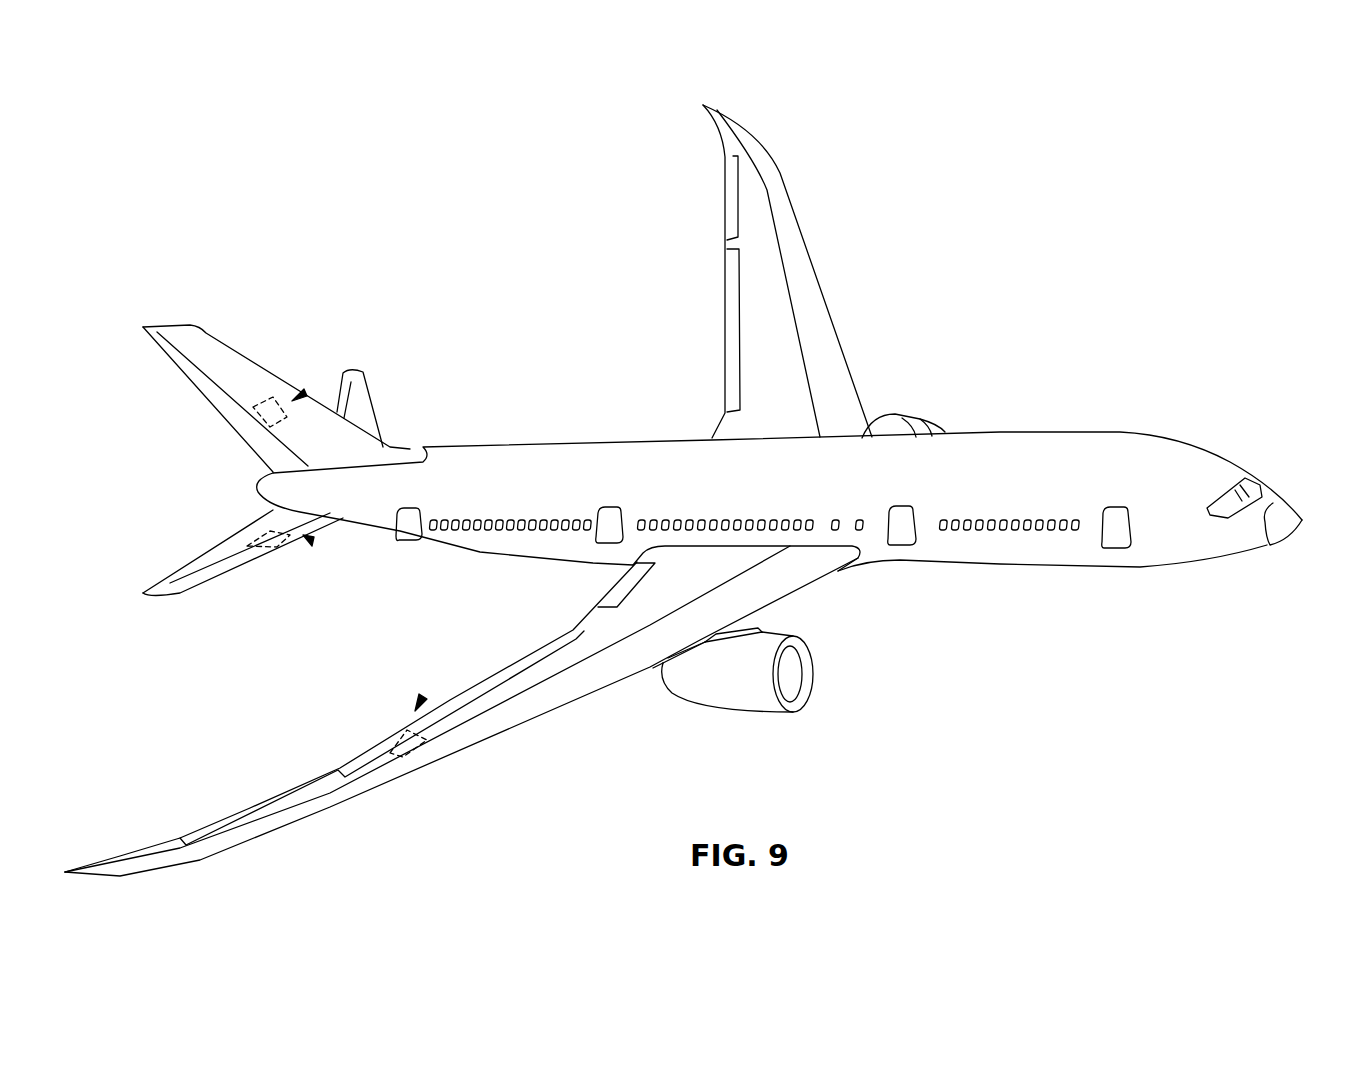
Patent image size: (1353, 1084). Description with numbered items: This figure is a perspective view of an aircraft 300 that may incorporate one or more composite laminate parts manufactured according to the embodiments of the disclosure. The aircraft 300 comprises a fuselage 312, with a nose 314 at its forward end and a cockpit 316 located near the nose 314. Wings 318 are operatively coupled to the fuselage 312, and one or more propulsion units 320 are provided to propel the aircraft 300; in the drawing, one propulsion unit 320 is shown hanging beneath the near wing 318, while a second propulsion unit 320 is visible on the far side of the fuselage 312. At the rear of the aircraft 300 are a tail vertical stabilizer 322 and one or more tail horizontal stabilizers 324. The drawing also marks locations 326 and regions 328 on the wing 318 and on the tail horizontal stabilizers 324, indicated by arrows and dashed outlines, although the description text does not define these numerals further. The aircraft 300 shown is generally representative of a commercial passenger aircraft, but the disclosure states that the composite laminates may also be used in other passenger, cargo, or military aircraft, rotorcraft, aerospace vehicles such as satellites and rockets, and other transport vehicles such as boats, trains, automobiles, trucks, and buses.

The aircraft 300 is at (1043, 220).
The fuselage 312 is at (1008, 450).
The nose 314 is at (1278, 530).
The cockpit 316 is at (1248, 485).
The wings 318 is at (778, 190).
The propulsion units 320 is at (912, 418).
The tail vertical stabilizer 322 is at (213, 358).
The tail horizontal stabilizers 324 is at (367, 407).
The sensor location 326 is at (303, 392).
The sensor region 328 is at (270, 388).